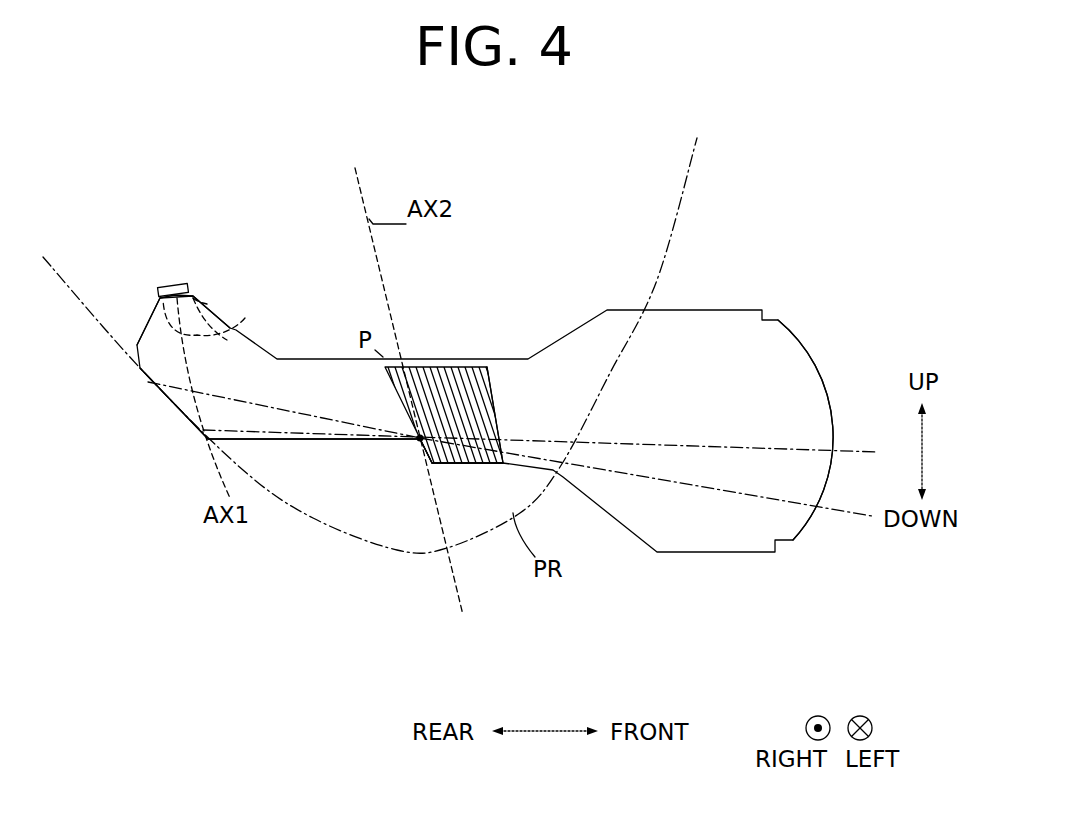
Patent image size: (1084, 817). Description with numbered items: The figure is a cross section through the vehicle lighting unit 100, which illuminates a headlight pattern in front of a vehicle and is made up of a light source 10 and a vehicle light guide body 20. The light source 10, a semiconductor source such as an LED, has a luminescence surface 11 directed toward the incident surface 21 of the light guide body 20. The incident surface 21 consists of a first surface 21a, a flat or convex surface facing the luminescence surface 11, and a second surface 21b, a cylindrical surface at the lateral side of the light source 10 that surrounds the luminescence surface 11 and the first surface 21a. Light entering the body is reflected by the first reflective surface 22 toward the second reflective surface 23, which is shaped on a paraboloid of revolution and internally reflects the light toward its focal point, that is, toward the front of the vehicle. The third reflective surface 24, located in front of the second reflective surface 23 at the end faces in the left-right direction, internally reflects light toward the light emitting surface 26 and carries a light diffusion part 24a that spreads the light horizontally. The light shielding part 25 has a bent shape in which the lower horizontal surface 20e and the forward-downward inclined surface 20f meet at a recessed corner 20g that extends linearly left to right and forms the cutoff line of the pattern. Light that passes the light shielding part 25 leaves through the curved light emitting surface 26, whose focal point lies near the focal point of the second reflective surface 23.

The vehicle lighting unit 100 is at (585, 159).
The light source 10 is at (175, 283).
The luminescence surface 11 is at (203, 300).
The vehicle light guide body 20 is at (688, 296).
The incident surface 21 is at (303, 283).
The first surface 21a is at (245, 318).
The second surface 21b is at (225, 300).
The first reflective surface 22 is at (140, 337).
The second reflective surface 23 is at (176, 402).
The third reflective surface 24 is at (510, 397).
The light diffusion part 24a is at (487, 403).
The light shielding part 25 is at (430, 425).
The light emitting surface 26 is at (802, 343).
The surface 20e is at (323, 440).
The corner 20g is at (420, 444).
The surface 20f is at (430, 462).